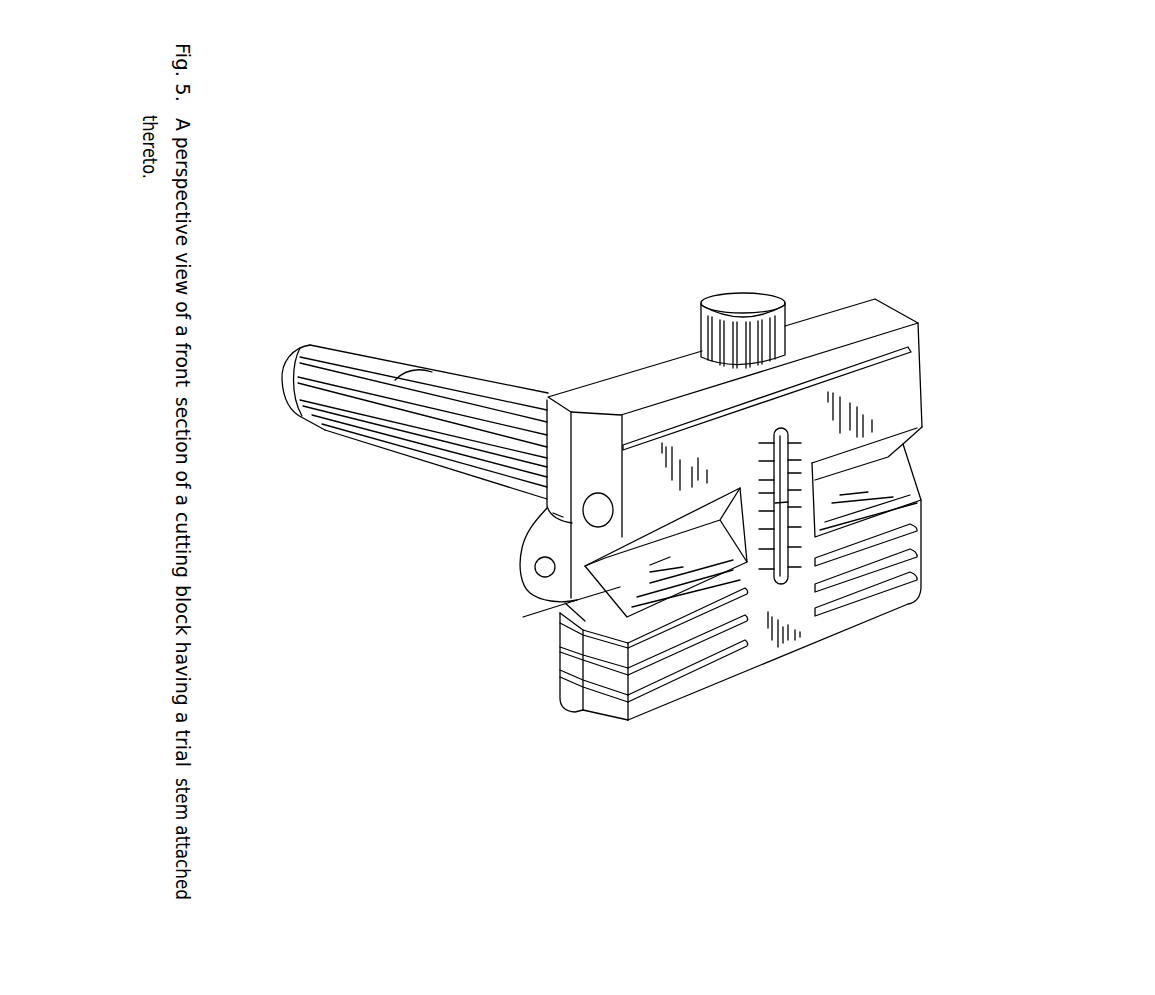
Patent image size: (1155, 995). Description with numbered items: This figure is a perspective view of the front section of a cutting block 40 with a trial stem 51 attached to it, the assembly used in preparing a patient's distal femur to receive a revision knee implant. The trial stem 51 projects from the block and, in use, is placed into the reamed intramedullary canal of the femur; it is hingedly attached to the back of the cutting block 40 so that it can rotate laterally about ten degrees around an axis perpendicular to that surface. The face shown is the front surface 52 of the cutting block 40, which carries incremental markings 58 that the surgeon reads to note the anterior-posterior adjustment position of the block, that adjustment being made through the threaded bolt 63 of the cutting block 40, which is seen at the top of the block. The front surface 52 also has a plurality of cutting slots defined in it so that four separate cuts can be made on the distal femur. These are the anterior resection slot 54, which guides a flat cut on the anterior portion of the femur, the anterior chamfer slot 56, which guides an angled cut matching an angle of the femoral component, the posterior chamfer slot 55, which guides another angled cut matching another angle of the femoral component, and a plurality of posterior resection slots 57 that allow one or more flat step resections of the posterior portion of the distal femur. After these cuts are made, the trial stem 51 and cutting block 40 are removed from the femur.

The cutting block 40 is at (950, 320).
The trial stem 51 is at (458, 403).
The front surface 52 is at (890, 392).
The anterior resection slot 54 is at (913, 352).
The posterior chamfer slot 55 is at (623, 537).
The anterior chamfer slot 56 is at (560, 627).
The posterior resection slots 57 is at (995, 531).
The incremental markings 58 is at (762, 462).
The threaded bolt 63 is at (727, 303).